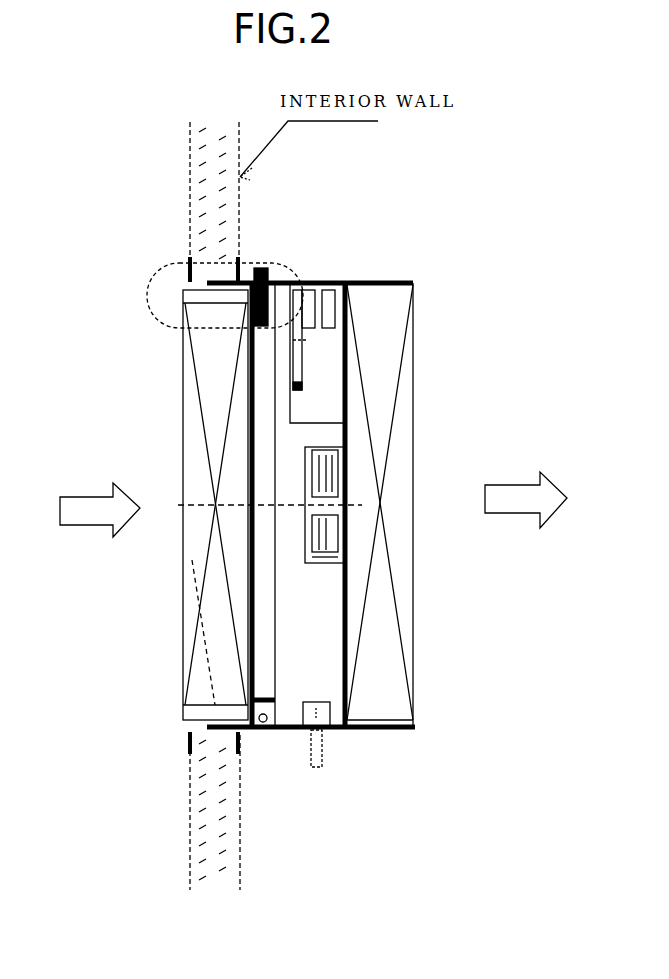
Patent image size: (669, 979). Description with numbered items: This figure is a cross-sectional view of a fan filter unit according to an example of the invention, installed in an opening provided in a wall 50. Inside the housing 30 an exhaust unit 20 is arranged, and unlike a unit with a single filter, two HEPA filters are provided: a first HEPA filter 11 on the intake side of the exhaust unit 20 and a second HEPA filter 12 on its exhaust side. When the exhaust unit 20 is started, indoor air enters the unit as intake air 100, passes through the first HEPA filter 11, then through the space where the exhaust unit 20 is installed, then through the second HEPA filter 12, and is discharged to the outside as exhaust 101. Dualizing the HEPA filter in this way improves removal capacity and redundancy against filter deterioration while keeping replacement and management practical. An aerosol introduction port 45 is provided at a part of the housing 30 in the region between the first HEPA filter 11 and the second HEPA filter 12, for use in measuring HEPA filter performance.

The first HEPA filter 11 is at (203, 557).
The second HEPA filter 12 is at (400, 557).
The exhaust unit 20 is at (330, 565).
The housing 30 is at (336, 730).
The aerosol introduction port 45 is at (264, 263).
The wall 50 is at (230, 237).
The intake air 100 is at (100, 503).
The exhaust 101 is at (520, 497).